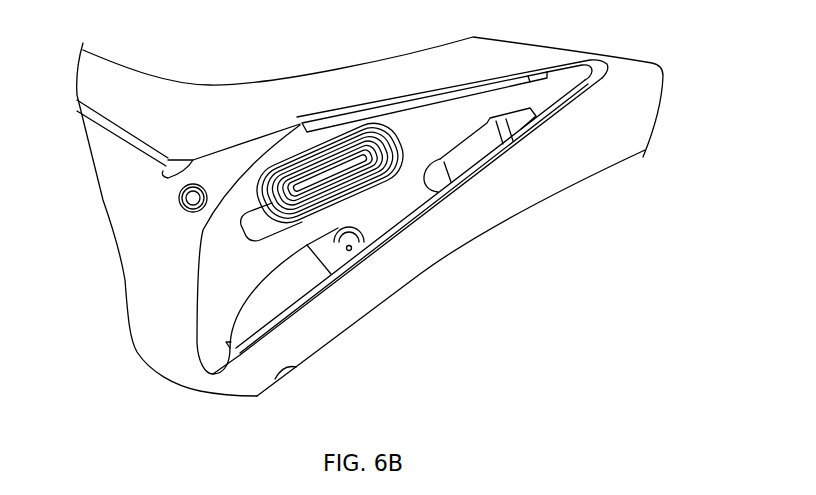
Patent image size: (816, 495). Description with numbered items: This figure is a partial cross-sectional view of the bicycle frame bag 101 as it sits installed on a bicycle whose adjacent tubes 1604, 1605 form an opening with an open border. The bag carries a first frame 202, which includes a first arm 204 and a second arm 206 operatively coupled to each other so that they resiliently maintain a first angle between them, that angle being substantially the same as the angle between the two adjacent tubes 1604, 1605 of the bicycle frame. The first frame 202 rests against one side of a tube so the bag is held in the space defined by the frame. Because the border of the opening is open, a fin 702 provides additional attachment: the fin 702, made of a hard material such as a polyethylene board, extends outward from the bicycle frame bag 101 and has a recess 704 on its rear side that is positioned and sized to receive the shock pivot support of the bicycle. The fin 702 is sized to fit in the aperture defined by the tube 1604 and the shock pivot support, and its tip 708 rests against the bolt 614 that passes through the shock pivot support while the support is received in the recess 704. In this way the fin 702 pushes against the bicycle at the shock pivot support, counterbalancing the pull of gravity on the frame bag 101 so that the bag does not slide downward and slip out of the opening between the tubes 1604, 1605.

The tube 1604 is at (327, 83).
The tube 1605 is at (467, 230).
The bicycle frame bag 101 is at (452, 62).
The fin 702 is at (192, 162).
The tip 708 is at (165, 177).
The recess 704 is at (193, 180).
The bolt 614 is at (183, 210).
The first arm 204 is at (520, 77).
The first frame 202 is at (323, 288).
The second arm 206 is at (527, 131).